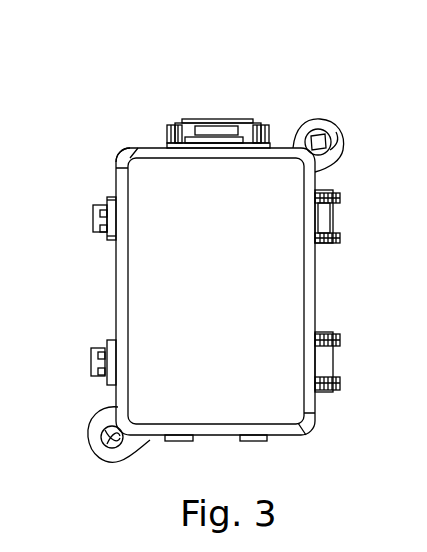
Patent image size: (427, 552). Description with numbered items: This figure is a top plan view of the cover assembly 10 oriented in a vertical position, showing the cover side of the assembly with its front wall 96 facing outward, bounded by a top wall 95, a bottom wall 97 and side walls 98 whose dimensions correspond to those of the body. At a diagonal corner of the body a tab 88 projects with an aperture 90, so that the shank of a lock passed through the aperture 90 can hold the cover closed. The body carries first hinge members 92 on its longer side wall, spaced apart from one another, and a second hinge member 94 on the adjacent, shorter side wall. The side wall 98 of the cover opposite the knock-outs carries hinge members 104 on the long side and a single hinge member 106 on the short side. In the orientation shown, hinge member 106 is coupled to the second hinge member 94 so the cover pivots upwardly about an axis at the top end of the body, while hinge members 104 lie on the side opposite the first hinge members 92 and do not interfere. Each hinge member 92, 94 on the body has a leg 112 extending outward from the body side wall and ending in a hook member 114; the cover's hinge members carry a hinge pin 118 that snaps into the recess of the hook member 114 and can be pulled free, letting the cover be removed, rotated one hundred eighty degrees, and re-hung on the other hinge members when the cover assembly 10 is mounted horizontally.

The cover assembly 10 is at (309, 79).
The tab 88 is at (332, 132).
The aperture 90 is at (318, 128).
The first hinge members 92 is at (93, 216).
The second hinge member 94 is at (258, 121).
The top wall 95 is at (152, 148).
The front wall 96 is at (290, 303).
The bottom wall 97 is at (218, 441).
The side walls 98 is at (316, 265).
The hinge members 104 is at (340, 198).
The hinge member 106 is at (213, 118).
The leg 112 is at (107, 200).
The hook member 114 is at (104, 238).
The hinge pin 118 is at (334, 222).